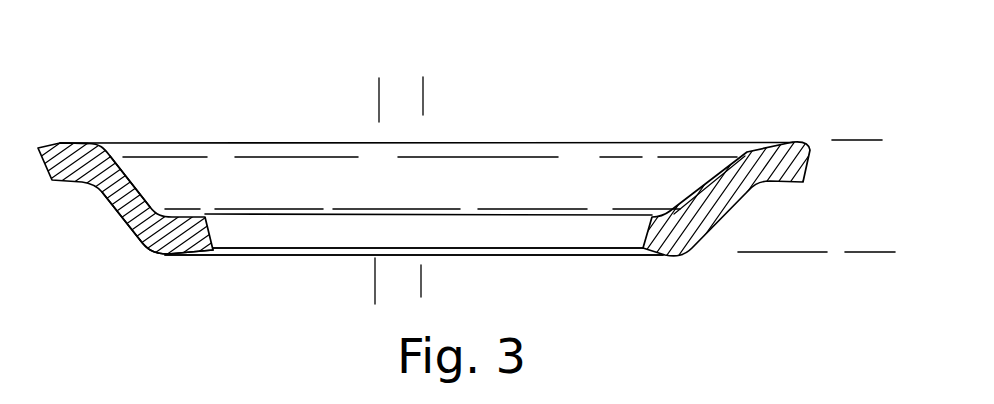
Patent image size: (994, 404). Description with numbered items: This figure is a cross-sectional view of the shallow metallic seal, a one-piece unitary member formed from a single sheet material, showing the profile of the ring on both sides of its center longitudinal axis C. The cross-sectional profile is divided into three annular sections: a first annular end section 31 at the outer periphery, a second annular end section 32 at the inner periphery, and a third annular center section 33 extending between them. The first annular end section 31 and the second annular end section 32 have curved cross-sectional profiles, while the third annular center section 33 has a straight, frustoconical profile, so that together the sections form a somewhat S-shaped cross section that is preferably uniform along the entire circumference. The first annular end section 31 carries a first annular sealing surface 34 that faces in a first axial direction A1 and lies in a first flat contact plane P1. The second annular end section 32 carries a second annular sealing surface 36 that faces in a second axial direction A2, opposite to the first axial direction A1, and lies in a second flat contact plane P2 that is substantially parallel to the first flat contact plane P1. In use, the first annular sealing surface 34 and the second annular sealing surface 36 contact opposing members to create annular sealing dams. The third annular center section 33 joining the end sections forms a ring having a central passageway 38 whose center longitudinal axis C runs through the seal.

The first annular end section 31 is at (54, 147).
The first annular sealing surface 34 is at (67, 162).
The third annular center section 33 is at (120, 203).
The second annular end section 32 is at (167, 253).
The second annular sealing surface 36 is at (180, 256).
The central passageway 38 is at (567, 232).
The first axial direction A1 is at (384, 88).
The second axial direction A2 is at (380, 294).
The center longitudinal axis C is at (423, 90).
The first flat contact plane P1 is at (852, 140).
The second flat contact plane P2 is at (785, 253).